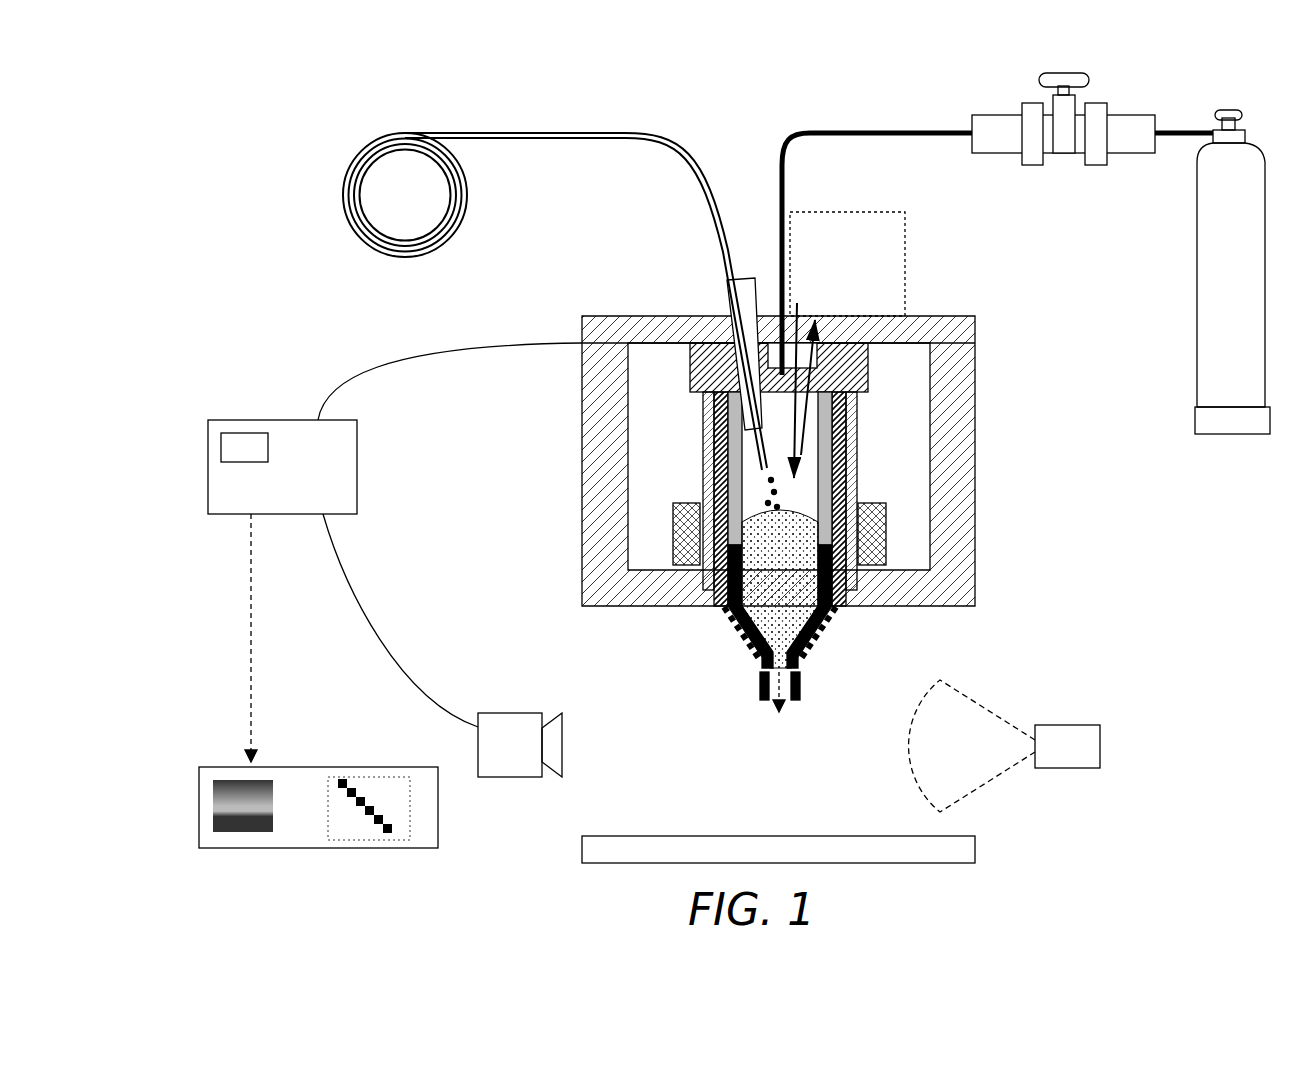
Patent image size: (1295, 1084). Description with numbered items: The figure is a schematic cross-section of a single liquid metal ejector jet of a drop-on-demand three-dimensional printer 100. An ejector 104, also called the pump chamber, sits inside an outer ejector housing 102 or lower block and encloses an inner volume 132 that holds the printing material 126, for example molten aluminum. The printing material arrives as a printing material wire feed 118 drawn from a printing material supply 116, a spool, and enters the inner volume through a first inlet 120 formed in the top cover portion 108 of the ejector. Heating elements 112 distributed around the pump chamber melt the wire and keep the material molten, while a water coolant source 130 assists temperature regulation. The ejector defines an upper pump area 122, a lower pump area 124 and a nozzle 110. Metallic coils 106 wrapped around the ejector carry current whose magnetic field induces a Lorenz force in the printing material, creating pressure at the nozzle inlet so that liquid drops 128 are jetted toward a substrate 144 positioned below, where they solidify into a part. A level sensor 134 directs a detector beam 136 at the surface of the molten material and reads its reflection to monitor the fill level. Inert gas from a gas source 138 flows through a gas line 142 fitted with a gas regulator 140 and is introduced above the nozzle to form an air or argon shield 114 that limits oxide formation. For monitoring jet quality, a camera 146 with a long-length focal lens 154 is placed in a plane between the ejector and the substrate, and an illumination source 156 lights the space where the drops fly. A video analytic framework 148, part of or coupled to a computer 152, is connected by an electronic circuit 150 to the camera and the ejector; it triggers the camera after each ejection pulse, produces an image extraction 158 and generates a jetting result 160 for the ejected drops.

The three-dimensional printer 100 is at (496, 119).
The outer ejector housing 102 is at (583, 406).
The ejector 104 is at (852, 465).
The metallic coils 106 is at (833, 433).
The top cover portion 108 is at (868, 368).
The nozzle 110 is at (750, 681).
The heating elements 112 is at (820, 622).
The air or argon shield 114 is at (806, 686).
The printing material supply 116 is at (345, 188).
The printing material wire feed 118 is at (585, 132).
The first inlet 120 is at (727, 295).
The upper pump area 122 is at (706, 527).
The lower pump area 124 is at (722, 614).
The printing material 126 is at (740, 625).
The liquid drops 128 is at (772, 692).
The water coolant source 130 is at (669, 547).
The inner volume 132 is at (823, 530).
The level sensor 134 is at (845, 250).
The detector beam 136 is at (813, 333).
The gas source 138 is at (1197, 258).
The gas regulator 140 is at (1115, 122).
The gas line 142 is at (802, 140).
The substrate 144 is at (975, 850).
The camera 146 is at (497, 713).
The video analytic framework 148 is at (245, 433).
The electronic circuit 150 is at (414, 352).
The computer 152 is at (357, 456).
The long-length focal lens 154 is at (555, 722).
The illumination source 156 is at (1063, 765).
The image extraction 158 is at (235, 778).
The jetting result 160 is at (409, 805).